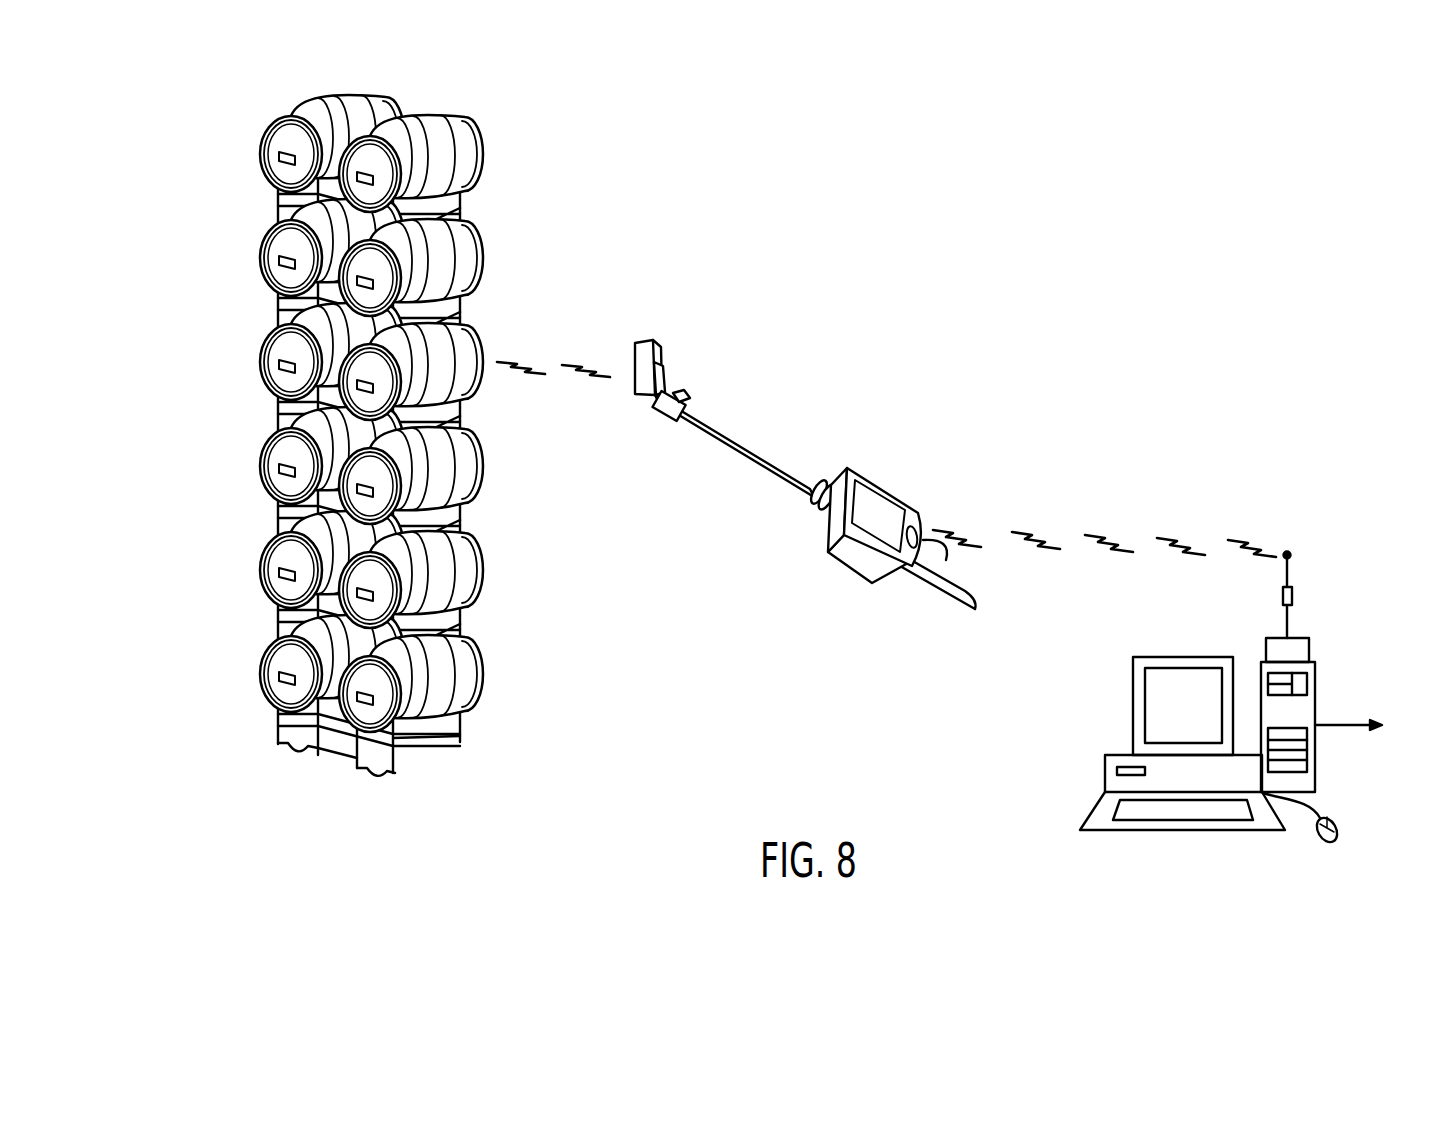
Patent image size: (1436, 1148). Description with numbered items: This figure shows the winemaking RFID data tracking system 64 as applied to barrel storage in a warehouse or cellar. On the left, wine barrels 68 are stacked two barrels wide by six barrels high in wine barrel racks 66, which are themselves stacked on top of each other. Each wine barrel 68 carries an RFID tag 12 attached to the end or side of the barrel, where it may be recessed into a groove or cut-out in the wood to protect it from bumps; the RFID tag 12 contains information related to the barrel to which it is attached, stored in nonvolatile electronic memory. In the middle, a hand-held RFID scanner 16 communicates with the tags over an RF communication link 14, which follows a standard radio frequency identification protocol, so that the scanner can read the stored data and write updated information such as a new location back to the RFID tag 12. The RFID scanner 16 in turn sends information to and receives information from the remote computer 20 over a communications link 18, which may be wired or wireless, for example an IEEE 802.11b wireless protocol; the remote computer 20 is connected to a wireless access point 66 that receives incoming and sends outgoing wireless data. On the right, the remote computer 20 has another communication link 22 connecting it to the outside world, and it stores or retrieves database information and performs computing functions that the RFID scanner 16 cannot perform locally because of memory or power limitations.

The RFID data tag 12 is at (280, 155).
The RF communication link 14 is at (573, 375).
The hand-held RFID scanner 16 is at (755, 440).
The communication link 18 is at (1095, 537).
The remote computer 20 is at (1105, 773).
The communication link 22 is at (1340, 723).
The winemaking RFID data tracking system 64 is at (528, 808).
The wine barrel racks / wireless access point 66 is at (1290, 625).
The wine barrels 68 is at (467, 680).